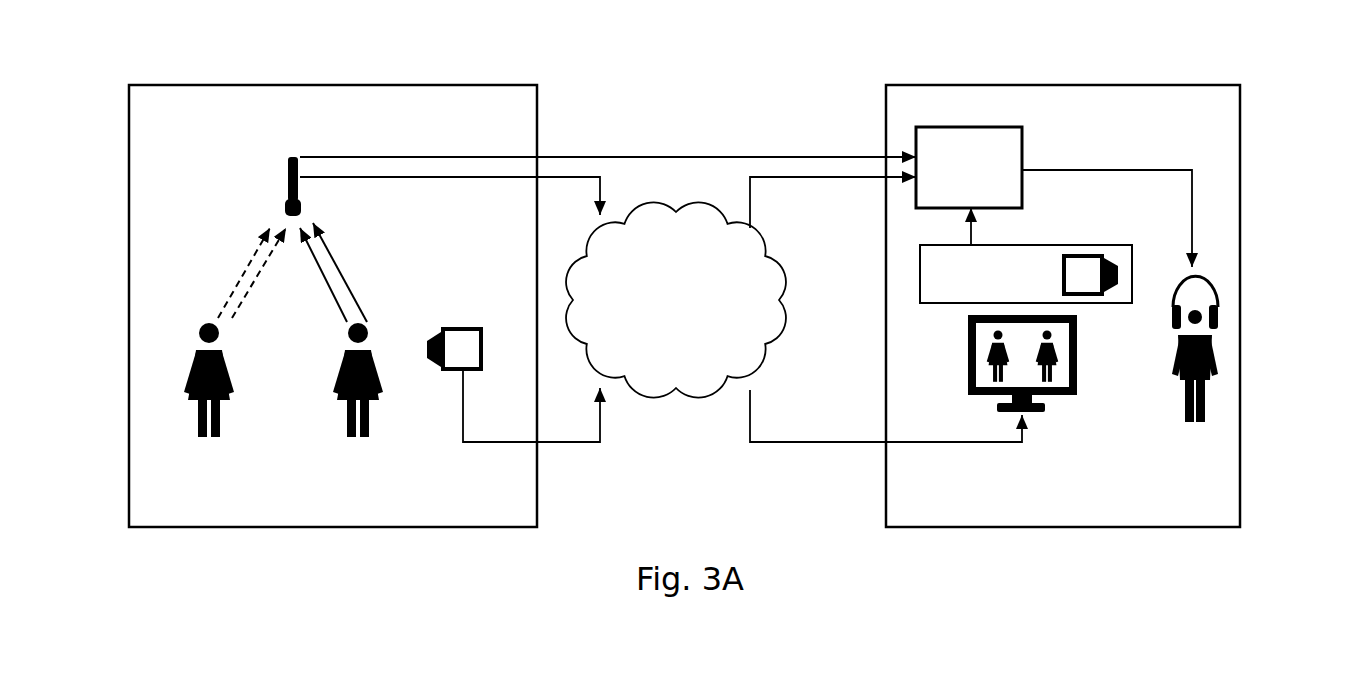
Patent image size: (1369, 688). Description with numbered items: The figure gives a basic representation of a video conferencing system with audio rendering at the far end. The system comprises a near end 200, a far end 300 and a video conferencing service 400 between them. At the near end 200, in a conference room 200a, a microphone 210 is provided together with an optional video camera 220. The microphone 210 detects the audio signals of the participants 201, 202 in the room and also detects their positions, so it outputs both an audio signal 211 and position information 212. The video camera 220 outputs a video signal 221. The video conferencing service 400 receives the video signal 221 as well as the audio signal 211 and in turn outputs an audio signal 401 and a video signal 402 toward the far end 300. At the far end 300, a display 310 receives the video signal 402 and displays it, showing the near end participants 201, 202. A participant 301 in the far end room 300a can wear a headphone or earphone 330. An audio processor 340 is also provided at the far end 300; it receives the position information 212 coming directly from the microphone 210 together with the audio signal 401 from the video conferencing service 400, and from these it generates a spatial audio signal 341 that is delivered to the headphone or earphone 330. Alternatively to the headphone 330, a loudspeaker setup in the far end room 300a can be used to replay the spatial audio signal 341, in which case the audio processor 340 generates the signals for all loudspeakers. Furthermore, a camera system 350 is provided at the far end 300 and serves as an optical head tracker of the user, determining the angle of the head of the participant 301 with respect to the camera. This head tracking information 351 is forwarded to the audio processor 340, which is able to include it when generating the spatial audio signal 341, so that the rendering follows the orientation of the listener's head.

The near end 200 is at (333, 285).
The room 200a is at (500, 500).
The participant 201 is at (225, 395).
The participant 202 is at (365, 395).
The microphone 210 is at (260, 185).
The audio signal 211 is at (450, 196).
The position information 212 is at (608, 140).
The video camera 220 is at (456, 332).
The video signal 221 is at (531, 406).
The far end 300 is at (1063, 285).
The far end room 300a is at (1188, 479).
The participant 301 is at (1205, 337).
The display 310 is at (1055, 398).
The headphone or earphone 330 is at (1208, 272).
The audio processor 340 is at (969, 167).
The spatial audio signal 341 is at (1107, 201).
The camera system 350 is at (1083, 245).
The head tracking information 351 is at (968, 232).
The video conferencing service 400 is at (676, 299).
The audio signal 401 is at (833, 202).
The video signal 402 is at (886, 416).